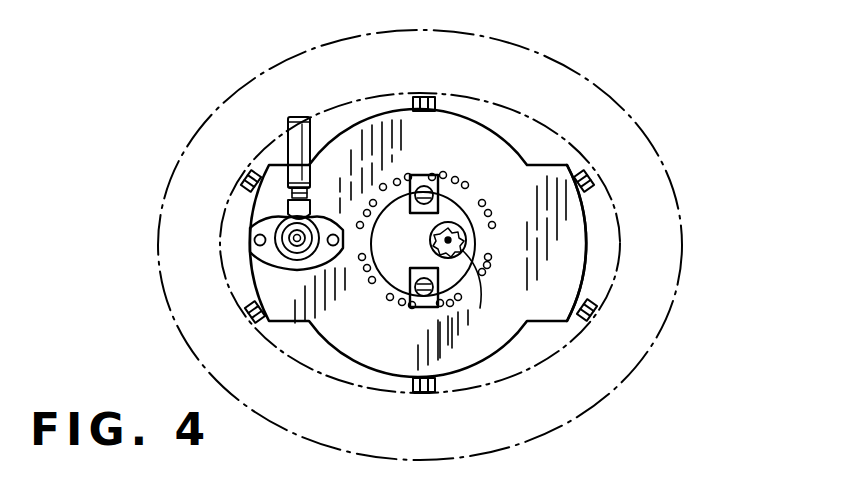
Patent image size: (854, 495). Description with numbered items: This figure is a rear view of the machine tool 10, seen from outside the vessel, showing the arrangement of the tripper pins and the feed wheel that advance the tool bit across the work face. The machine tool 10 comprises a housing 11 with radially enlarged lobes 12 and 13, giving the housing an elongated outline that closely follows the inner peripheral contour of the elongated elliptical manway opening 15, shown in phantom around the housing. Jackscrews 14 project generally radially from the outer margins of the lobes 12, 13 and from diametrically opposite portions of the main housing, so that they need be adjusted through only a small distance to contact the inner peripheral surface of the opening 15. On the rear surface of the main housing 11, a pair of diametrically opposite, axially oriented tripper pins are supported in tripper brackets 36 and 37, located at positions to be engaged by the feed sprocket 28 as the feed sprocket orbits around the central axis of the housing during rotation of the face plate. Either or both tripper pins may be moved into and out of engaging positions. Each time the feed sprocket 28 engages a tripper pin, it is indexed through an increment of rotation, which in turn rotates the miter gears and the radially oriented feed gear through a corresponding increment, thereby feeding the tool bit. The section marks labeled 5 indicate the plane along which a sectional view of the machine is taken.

The section line 5- 5 is at (409, 68).
The machine tool 10 is at (537, 132).
The housing 11 is at (347, 133).
The radially enlarged lobe 12 is at (258, 215).
The radially enlarged lobe 13 is at (573, 257).
The jackscrew 14 is at (416, 99).
The manway opening 15 is at (624, 110).
The feed sprocket 28 is at (450, 352).
The tripper bracket 36 is at (405, 180).
The tripper bracket 37 is at (430, 306).